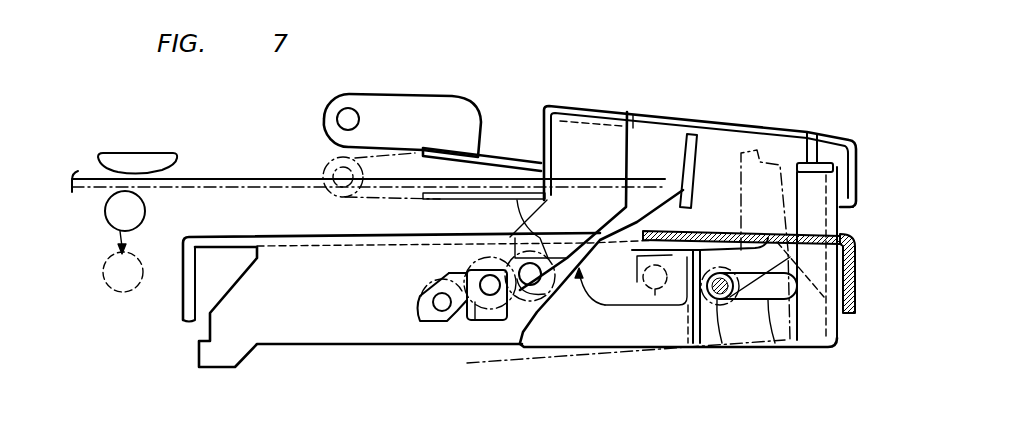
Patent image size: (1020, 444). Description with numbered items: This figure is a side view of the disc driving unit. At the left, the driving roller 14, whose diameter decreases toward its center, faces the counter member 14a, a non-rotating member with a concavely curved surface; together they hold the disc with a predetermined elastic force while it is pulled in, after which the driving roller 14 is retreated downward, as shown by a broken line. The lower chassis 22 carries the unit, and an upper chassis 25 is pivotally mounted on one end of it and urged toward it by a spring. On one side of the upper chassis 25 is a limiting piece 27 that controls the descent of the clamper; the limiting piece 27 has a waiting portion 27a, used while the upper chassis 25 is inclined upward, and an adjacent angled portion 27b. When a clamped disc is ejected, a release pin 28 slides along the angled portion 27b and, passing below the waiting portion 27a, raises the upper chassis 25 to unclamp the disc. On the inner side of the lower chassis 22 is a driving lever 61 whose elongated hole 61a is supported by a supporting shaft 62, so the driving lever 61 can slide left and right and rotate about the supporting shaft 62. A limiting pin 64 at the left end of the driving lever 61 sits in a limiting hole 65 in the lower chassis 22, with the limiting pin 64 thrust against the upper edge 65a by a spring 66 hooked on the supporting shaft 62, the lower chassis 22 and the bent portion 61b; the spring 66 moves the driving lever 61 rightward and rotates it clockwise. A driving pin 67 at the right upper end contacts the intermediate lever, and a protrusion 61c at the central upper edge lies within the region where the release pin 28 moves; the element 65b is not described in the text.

The driving roller 14 is at (107, 217).
The counter member 14a is at (139, 160).
The lower chassis 22 is at (295, 340).
The upper chassis 25 is at (667, 120).
The limiting piece 27 is at (598, 136).
The waiting portion 27a is at (517, 200).
The angled portion 27b is at (698, 192).
The release pin 28 is at (557, 300).
The driving lever 61 is at (805, 346).
The elongated hole 61a is at (775, 343).
The bent portion 61b is at (841, 212).
The protrusion 61c is at (580, 282).
The supporting shaft 62 is at (722, 343).
The limiting pin 64 is at (488, 295).
The limiting hole 65 is at (440, 323).
The upper edge 65a is at (462, 262).
The roller 65b is at (425, 297).
The spring 66 is at (856, 304).
The driving pin 67 is at (811, 132).